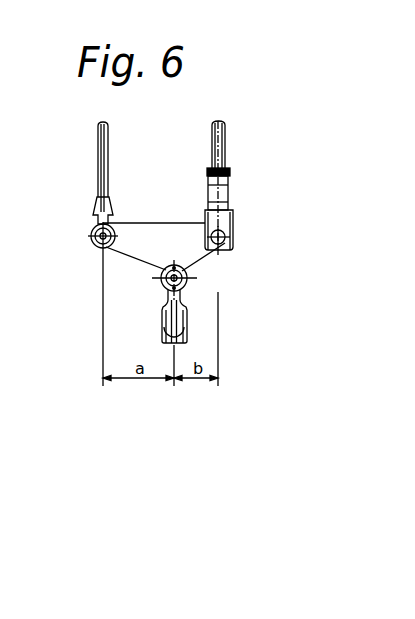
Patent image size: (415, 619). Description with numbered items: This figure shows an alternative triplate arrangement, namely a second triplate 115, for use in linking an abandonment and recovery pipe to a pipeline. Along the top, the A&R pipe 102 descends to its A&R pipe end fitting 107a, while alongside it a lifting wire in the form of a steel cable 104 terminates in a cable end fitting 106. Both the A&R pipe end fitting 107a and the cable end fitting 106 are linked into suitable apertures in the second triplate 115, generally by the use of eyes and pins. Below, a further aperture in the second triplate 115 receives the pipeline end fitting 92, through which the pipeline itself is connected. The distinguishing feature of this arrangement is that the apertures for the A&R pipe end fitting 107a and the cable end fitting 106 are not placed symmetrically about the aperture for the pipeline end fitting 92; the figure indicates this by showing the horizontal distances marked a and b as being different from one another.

The pipeline end fitting 92 is at (214, 301).
The A&R pipe 102 is at (263, 188).
The steel cable 104 is at (56, 167).
The cable end fitting 106 is at (60, 223).
The A&R pipe end fitting 107a is at (272, 209).
The second triplate 115 is at (124, 256).